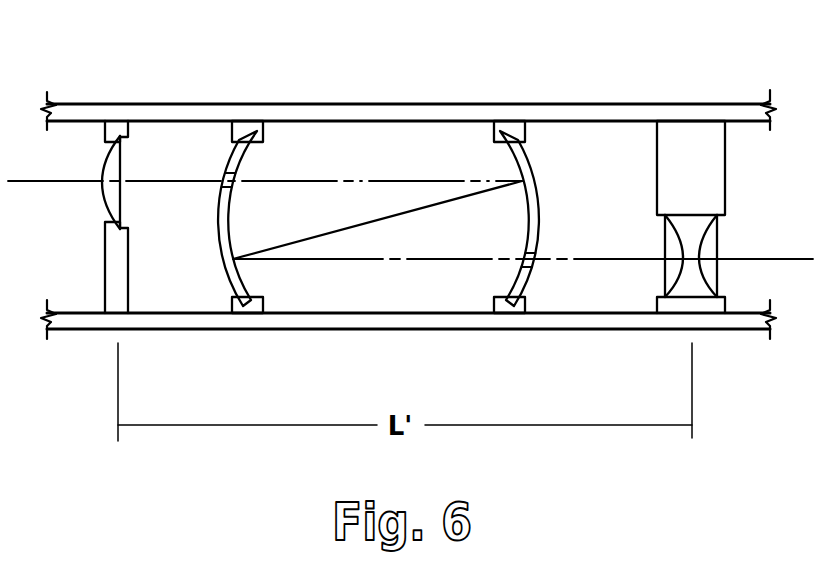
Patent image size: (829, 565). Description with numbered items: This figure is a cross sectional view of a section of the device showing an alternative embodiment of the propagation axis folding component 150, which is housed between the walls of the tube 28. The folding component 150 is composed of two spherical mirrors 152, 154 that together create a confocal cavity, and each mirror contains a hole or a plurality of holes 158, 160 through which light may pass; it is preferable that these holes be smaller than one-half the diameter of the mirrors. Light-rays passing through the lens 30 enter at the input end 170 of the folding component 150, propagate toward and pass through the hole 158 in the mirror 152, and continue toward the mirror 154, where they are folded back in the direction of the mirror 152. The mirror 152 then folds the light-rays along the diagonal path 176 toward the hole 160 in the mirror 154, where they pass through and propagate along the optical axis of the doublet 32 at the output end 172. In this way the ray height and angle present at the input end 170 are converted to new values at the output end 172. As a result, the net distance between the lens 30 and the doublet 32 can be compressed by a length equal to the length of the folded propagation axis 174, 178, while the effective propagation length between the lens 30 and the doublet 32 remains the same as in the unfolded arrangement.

The housing tube 28 is at (593, 104).
The lens 30 is at (105, 160).
The doublet 32 is at (692, 222).
The propagation axis folding component 150 is at (520, 93).
The spherical mirror 152 is at (214, 217).
The spherical mirror 154 is at (533, 217).
The hole 158 is at (236, 184).
The hole 160 is at (531, 262).
The input end 170 is at (198, 180).
The output end 172 is at (585, 258).
The folded propagation axis 174 is at (332, 181).
The diagonal beam path between mirrors 176 is at (401, 216).
The folded propagation axis 178 is at (435, 261).